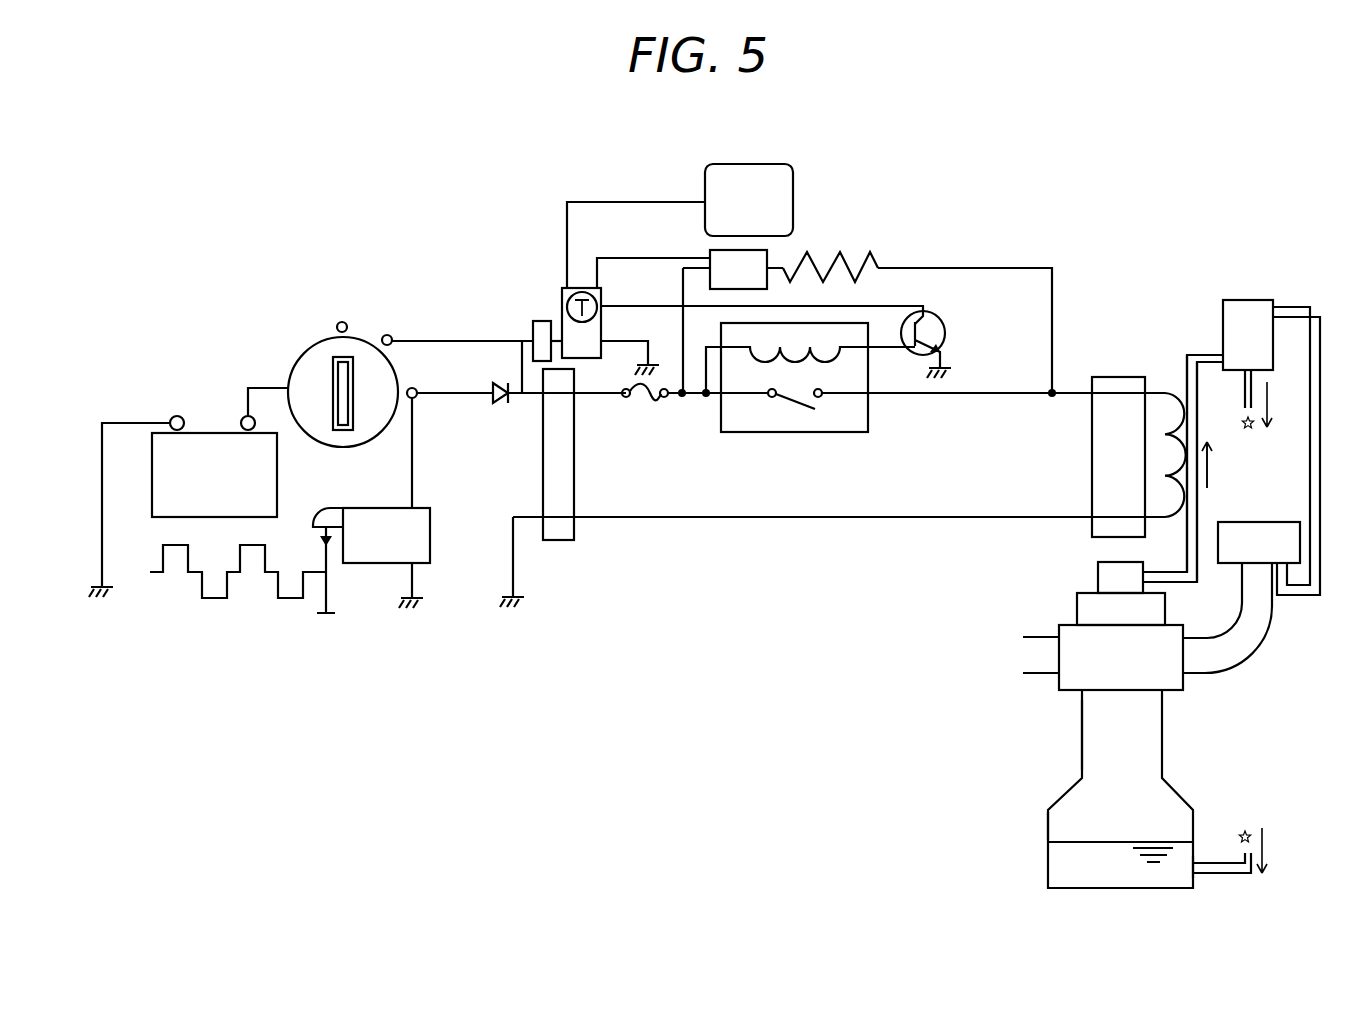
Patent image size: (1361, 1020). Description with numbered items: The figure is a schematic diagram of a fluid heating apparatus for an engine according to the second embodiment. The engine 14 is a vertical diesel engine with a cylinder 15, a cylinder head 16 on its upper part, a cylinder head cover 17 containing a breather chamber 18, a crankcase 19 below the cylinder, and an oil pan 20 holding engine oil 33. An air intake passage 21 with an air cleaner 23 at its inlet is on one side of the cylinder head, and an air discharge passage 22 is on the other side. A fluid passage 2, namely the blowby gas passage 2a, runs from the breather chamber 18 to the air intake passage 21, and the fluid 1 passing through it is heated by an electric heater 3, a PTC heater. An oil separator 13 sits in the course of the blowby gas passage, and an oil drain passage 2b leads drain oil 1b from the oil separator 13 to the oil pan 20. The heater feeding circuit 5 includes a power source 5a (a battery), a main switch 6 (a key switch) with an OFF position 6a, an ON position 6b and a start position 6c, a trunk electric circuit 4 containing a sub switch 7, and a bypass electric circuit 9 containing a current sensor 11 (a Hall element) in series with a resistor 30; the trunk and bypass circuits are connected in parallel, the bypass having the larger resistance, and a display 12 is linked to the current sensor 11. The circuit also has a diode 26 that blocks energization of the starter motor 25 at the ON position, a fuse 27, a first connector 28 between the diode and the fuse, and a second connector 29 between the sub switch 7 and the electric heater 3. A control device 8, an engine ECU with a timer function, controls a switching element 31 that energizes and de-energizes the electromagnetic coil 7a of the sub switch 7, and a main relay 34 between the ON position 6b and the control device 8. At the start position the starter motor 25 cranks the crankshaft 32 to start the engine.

The fluid 1 is at (1208, 478).
The drain oil 1b is at (1282, 624).
The fluid passage 2 is at (1192, 353).
The blowby gas passage 2a is at (1192, 468).
The oil drain passage 2b is at (1243, 404).
The electric heater 3 is at (1177, 413).
The trunk electric circuit 4 is at (983, 407).
The heater feeding circuit 5 is at (1078, 385).
The power source 5a is at (207, 452).
The main switch 6 is at (366, 326).
The OFF position 6a is at (335, 328).
The ON position 6b is at (395, 340).
The start position 6c is at (418, 397).
The sub switch 7 is at (791, 443).
The electromagnetic coil 7a is at (835, 362).
The control device 8 is at (588, 287).
The bypass electric circuit 9 is at (983, 257).
The current sensor 11 is at (716, 257).
The display 12 is at (750, 180).
The oil separator 13 is at (1247, 318).
The engine 14 is at (1173, 753).
The cylinder 15 is at (1103, 732).
The cylinder head 16 is at (1082, 668).
The cylinder head cover 17 is at (1083, 610).
The breather chamber 18 is at (1110, 580).
The crankcase 19 is at (1047, 808).
The oil pan 20 is at (1047, 863).
The air intake passage 21 is at (1233, 665).
The air discharge passage 22 is at (1047, 655).
The air cleaner 23 is at (1288, 560).
The starter motor 25 is at (373, 560).
The diode 26 is at (502, 405).
The fuse 27 is at (640, 398).
The first connector 28 is at (568, 542).
The second connector 29 is at (1102, 510).
The resistor 30 is at (840, 252).
The switching element 31 is at (947, 322).
The crankshaft 32 is at (273, 592).
The engine oil 33 is at (1193, 857).
The main relay 34 is at (543, 320).